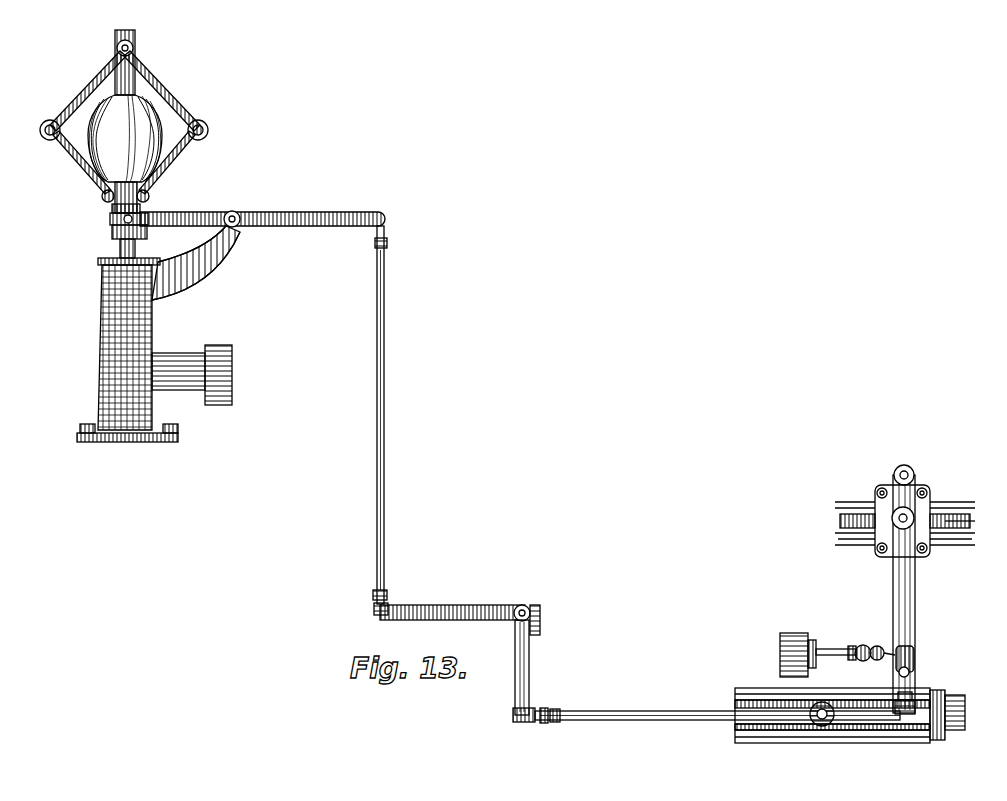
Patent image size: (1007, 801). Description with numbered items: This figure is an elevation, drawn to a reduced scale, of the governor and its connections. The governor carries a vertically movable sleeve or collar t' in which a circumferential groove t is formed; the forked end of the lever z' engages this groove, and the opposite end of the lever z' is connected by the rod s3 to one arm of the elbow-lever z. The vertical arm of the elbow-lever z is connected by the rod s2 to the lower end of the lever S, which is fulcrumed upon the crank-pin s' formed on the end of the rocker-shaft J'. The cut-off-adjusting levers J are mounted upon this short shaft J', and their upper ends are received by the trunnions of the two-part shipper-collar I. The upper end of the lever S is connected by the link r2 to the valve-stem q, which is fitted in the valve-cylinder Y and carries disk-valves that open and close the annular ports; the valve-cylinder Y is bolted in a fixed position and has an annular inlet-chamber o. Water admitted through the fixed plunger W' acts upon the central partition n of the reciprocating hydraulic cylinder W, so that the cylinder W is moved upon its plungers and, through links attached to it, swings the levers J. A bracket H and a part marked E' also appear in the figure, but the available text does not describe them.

The sleeve or collar t' is at (109, 206).
The circumferential groove t is at (113, 228).
The lever z' is at (262, 209).
The rod s3 is at (384, 415).
The elbow-lever z is at (529, 671).
The rod s2 is at (633, 714).
The reciprocating hydraulic cylinder W is at (832, 727).
The fixed plunger W' is at (962, 703).
The central partition n is at (822, 702).
The valve-cylinder Y is at (798, 644).
The valve-stem q is at (836, 644).
The link r2 is at (871, 645).
The cut-off-adjusting lever J is at (913, 589).
The short shaft J' is at (915, 652).
The crank-pin s' is at (923, 661).
The lever S is at (912, 690).
The bracket H is at (905, 510).
The shipper-collar I is at (903, 511).
The frame rails E' is at (905, 513).
The annular inlet-chamber o is at (965, 521).